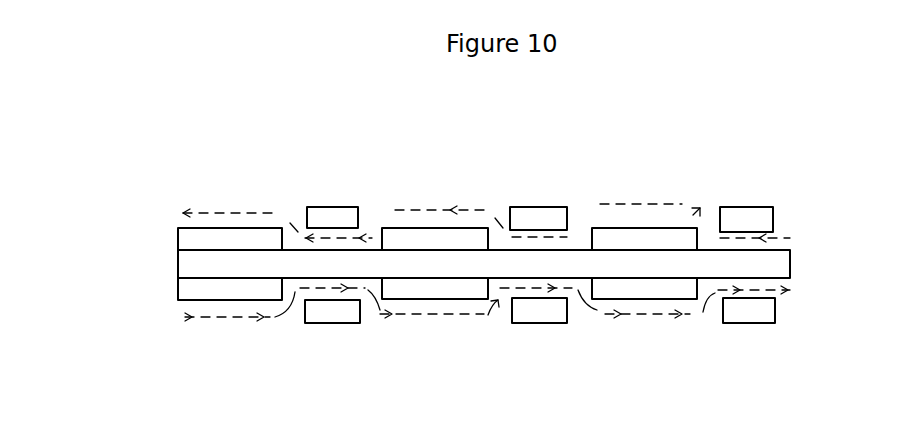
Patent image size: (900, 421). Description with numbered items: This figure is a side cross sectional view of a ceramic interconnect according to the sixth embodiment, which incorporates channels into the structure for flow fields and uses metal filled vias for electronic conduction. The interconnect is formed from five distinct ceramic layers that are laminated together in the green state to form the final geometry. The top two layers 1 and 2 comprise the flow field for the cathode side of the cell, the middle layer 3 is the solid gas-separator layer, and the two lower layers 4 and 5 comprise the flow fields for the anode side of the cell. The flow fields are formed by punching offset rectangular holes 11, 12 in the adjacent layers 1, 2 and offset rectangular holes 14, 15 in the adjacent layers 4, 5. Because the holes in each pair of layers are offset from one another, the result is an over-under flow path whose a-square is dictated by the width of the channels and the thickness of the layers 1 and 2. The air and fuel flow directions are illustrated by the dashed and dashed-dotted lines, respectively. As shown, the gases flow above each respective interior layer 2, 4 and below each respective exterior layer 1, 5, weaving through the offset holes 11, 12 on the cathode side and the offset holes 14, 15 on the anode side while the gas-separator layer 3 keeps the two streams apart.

The top ceramic layer 1 is at (787, 216).
The second ceramic layer 2 is at (172, 240).
The solid gas-separator layer 3 is at (172, 264).
The fourth ceramic layer 4 is at (172, 294).
The bottom ceramic layer 5 is at (783, 320).
The offset rectangular holes 11 is at (272, 202).
The offset rectangular holes 12 is at (377, 242).
The offset rectangular holes 14 is at (580, 283).
The offset rectangular holes 15 is at (657, 325).